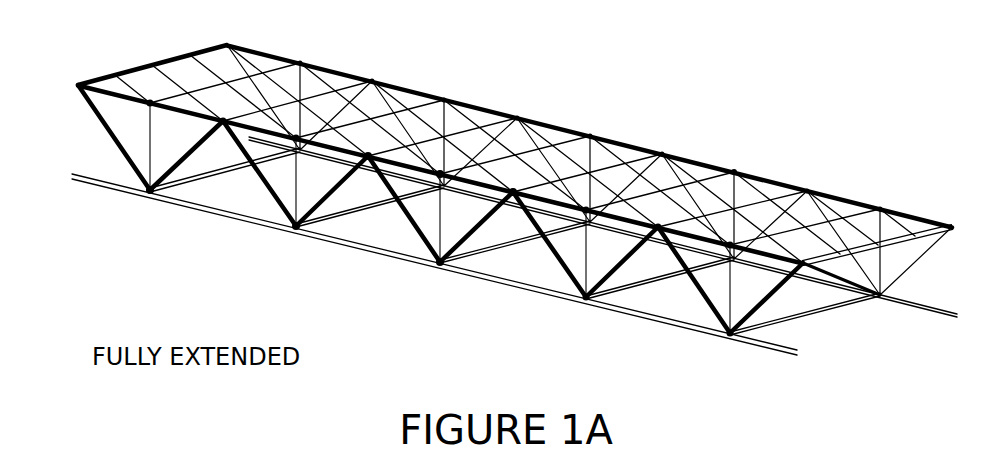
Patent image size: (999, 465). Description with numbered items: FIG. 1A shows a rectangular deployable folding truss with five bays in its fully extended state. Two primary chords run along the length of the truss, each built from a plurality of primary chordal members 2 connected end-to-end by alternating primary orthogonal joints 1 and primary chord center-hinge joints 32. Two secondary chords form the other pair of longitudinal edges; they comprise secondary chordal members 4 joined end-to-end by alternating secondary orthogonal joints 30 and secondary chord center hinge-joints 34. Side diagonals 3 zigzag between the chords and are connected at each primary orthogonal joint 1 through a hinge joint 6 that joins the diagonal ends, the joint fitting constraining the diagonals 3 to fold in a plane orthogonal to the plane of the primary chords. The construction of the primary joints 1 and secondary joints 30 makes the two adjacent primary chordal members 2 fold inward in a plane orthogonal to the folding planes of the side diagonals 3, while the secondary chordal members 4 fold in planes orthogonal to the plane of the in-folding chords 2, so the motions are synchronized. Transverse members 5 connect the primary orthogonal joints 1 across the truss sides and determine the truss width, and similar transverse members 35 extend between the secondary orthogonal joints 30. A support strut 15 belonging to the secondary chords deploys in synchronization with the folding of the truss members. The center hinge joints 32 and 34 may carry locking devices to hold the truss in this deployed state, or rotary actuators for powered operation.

The primary orthogonal joint 1 is at (434, 268).
The primary chordal member 2 is at (385, 256).
The side diagonal 3 is at (104, 130).
The secondary chordal member 4 is at (500, 195).
The transverse member 5 is at (833, 306).
The hinge joint 6 is at (291, 233).
The support strut 15 is at (143, 167).
The secondary orthogonal joint 30 is at (368, 157).
The primary chord center-hinge joint 32 is at (650, 318).
The secondary chord center hinge-joint 34 is at (443, 168).
The transverse member 35 is at (918, 232).